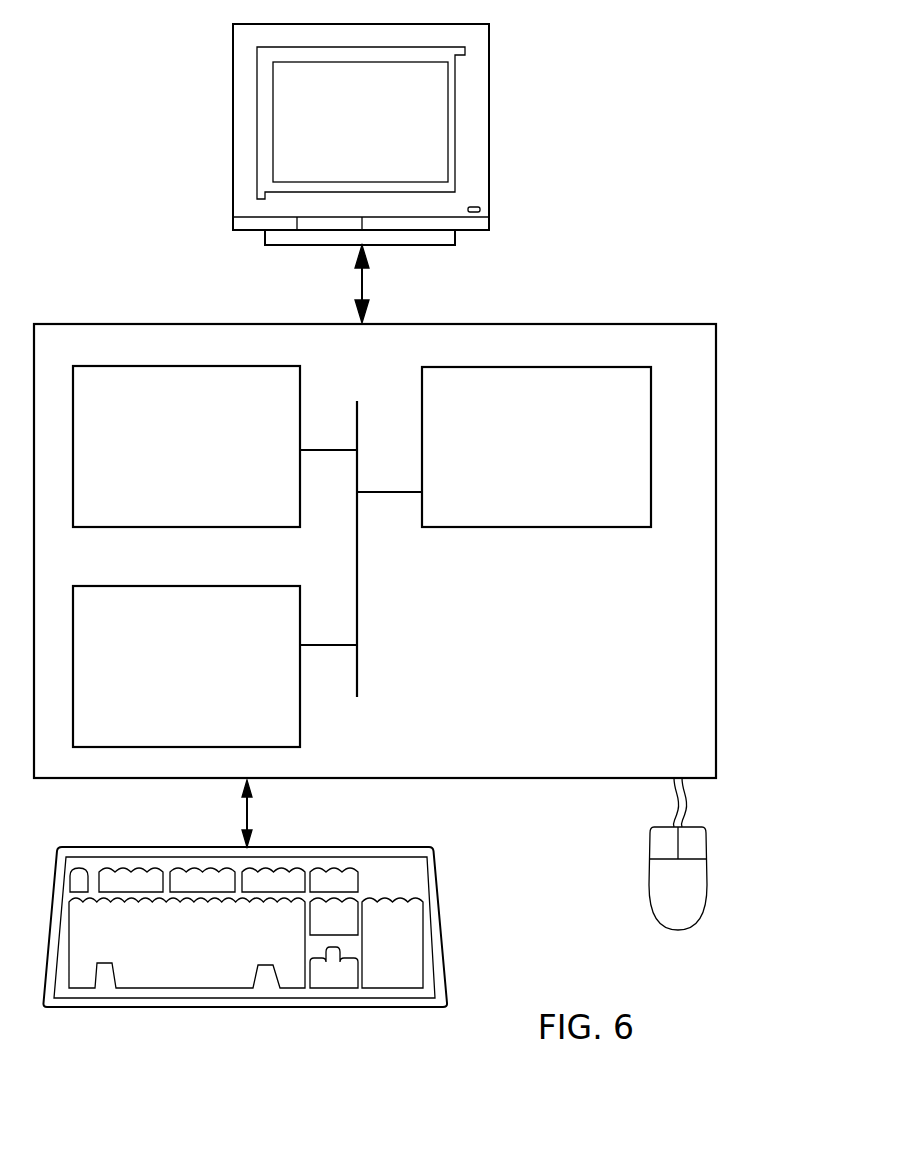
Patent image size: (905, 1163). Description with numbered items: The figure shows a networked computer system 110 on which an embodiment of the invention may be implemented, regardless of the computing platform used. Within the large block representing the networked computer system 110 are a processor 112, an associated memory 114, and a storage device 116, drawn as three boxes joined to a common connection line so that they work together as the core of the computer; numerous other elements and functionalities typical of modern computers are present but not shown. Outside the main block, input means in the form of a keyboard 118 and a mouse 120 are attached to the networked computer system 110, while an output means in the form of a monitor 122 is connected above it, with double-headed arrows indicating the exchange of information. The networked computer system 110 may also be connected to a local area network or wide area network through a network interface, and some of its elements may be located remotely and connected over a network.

The networked computer system 110 is at (736, 179).
The processor 112 is at (536, 447).
The memory 114 is at (186, 446).
The storage device 116 is at (186, 666).
The keyboard 118 is at (245, 927).
The mouse 120 is at (678, 854).
The monitor 122 is at (361, 134).